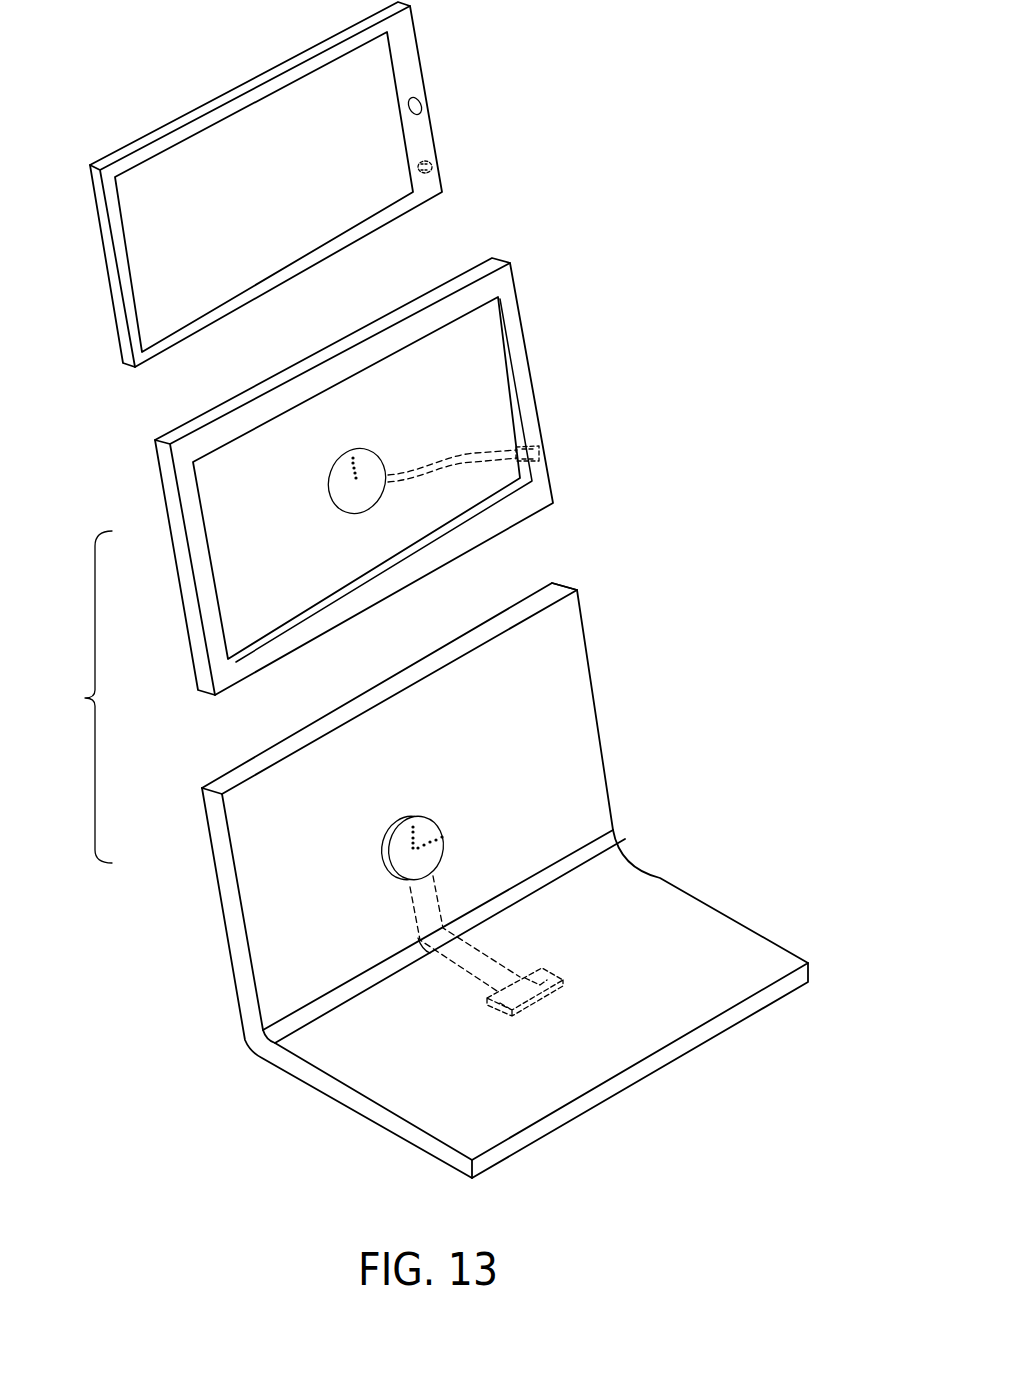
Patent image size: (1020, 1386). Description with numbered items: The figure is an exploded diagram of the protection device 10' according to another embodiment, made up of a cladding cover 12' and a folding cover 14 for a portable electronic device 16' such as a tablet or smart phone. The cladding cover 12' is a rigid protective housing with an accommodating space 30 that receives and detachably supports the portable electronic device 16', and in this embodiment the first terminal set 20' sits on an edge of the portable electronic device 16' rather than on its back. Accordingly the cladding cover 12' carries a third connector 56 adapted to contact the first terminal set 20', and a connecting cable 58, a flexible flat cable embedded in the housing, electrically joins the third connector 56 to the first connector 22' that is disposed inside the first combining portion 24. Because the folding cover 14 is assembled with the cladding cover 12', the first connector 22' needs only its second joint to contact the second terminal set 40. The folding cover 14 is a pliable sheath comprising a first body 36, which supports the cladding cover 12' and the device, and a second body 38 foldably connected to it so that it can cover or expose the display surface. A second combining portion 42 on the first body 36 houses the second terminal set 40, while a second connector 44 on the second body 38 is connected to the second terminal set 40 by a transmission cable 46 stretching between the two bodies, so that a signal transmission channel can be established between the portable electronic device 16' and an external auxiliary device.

The protection device 10' is at (77, 697).
The cladding cover 12' is at (352, 476).
The folding cover 14 is at (454, 880).
The portable electronic device 16' is at (266, 184).
The first terminal set 20' is at (472, 160).
The first connector 22' is at (325, 393).
The first combining portion 24 is at (372, 470).
The accommodating space 30 is at (461, 425).
The first body 36 is at (567, 755).
The second body 38 is at (750, 953).
The second terminal set 40 is at (417, 837).
The second combining portion 42 is at (400, 863).
The second connector 44 is at (523, 990).
The transmission cable 46 is at (412, 905).
The third connector 56 is at (540, 453).
The connecting cable 58 is at (475, 475).